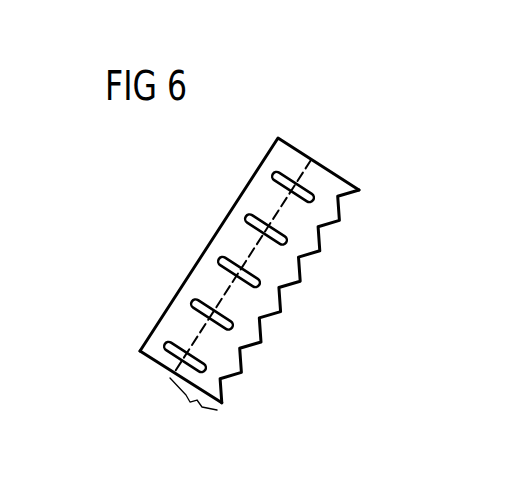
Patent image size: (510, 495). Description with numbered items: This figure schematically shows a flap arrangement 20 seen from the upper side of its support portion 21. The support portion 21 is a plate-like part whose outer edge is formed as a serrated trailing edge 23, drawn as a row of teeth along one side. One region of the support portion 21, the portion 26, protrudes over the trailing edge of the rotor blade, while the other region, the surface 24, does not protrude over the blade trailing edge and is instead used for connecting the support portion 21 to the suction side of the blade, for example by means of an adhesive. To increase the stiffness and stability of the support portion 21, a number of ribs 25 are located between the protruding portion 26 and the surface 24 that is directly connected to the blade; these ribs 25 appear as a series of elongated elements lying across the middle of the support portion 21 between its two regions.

The sheet metal plate 20 is at (232, 267).
The support portion 21 is at (288, 162).
The serrated trailing edge 23 is at (280, 301).
The surface 24 is at (144, 372).
The ribs 25 is at (189, 304).
The portion 26 is at (192, 406).